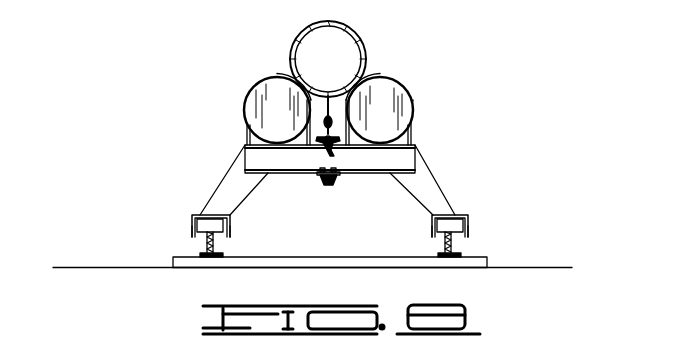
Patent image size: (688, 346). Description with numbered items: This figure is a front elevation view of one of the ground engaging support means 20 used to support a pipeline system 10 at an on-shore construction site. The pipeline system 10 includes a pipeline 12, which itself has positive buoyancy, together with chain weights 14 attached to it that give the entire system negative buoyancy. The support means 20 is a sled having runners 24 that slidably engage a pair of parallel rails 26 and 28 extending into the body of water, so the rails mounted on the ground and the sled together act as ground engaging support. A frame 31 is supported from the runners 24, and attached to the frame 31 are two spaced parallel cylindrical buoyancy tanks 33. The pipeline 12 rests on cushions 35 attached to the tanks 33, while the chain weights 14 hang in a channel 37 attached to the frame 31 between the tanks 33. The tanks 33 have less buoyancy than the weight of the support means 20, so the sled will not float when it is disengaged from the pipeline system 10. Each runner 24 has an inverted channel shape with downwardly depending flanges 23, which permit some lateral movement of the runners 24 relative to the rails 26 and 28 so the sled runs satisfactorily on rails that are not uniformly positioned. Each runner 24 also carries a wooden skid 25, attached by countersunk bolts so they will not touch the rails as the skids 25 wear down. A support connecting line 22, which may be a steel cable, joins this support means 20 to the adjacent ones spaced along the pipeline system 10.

The pipeline system 10 is at (353, 58).
The pipeline 12 is at (361, 36).
The chain weights 14 is at (318, 140).
The ground engaging support means 20 is at (422, 81).
The support connecting line 22 is at (325, 180).
The downwardly depending flanges 23 is at (228, 228).
The runners 24 is at (203, 213).
The wooden skid 25 is at (198, 223).
The rail 26 is at (210, 245).
The rail 28 is at (452, 247).
The frame 31 is at (402, 158).
The cylindrical buoyancy tanks 33 is at (248, 92).
The cushions 35 is at (287, 74).
The channel 37 is at (342, 144).